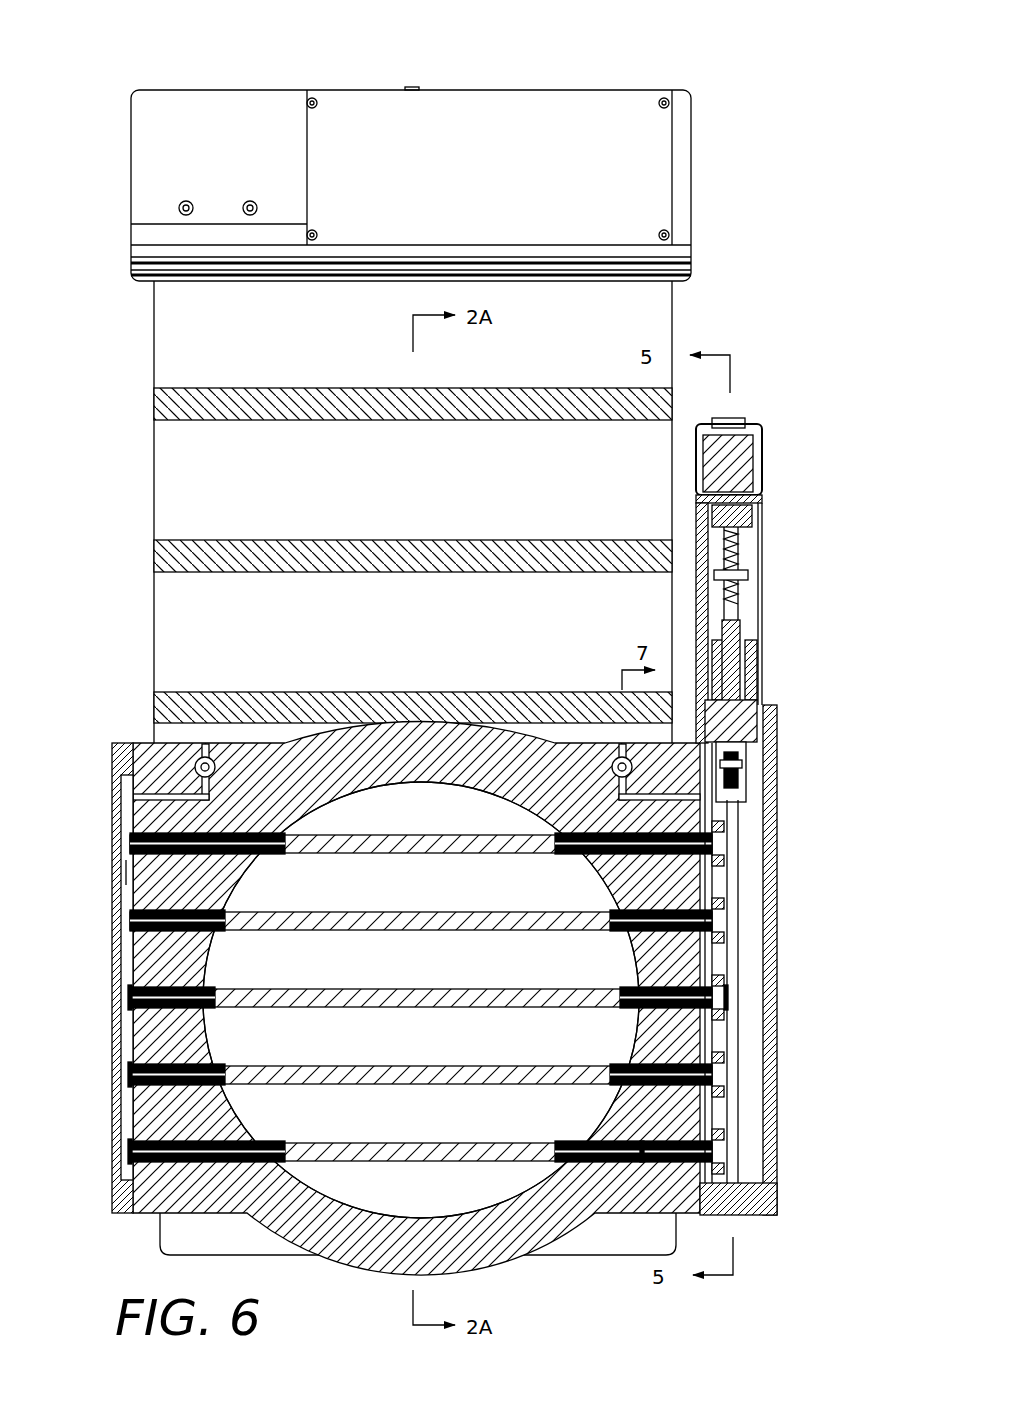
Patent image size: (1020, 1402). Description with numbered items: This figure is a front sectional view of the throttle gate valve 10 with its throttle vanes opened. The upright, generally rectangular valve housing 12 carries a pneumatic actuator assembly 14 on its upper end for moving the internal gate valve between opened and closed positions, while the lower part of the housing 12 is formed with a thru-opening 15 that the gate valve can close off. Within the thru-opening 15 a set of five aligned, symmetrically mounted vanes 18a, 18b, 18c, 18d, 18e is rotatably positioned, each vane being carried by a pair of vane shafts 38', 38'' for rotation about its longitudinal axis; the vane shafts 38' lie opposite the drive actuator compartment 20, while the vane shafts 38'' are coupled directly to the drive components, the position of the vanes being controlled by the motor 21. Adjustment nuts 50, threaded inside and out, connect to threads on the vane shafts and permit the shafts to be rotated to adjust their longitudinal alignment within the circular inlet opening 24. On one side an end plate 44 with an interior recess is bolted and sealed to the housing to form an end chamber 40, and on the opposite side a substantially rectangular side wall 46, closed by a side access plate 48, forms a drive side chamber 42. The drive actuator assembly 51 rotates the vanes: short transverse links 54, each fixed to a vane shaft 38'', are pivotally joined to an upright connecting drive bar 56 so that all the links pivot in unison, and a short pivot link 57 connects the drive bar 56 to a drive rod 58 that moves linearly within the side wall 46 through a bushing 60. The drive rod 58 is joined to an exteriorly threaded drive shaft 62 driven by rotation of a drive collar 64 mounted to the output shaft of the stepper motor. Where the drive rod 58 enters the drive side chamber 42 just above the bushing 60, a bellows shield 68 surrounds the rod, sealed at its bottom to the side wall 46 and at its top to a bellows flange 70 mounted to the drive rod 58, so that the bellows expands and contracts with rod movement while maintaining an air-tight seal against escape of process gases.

The throttle gate valve 10 is at (676, 40).
The valve housing 12 is at (177, 365).
The pneumatic actuator assembly 14 is at (157, 185).
The thru-opening 15 is at (435, 800).
The vane 18a is at (410, 854).
The vane 18b is at (373, 931).
The vane 18c is at (430, 1008).
The vane 18d is at (383, 1085).
The vane 18e is at (412, 1162).
The drive actuator compartment 20 is at (800, 937).
The motor 21 is at (795, 465).
The inlet opening 24 is at (340, 1190).
The vane shaft 38' is at (91, 979).
The vane shaft 38'' is at (782, 1014).
The end chamber 40 is at (126, 872).
The drive side chamber 42 is at (770, 1122).
The end plate 44 is at (118, 750).
The side wall 46 is at (760, 680).
The side access plate 48 is at (770, 1082).
The adjustment nut 50 is at (126, 1048).
The drive actuator assembly 51 is at (800, 797).
The transverse link 54 is at (746, 937).
The connecting drive bar 56 is at (745, 862).
The pivot link 57 is at (742, 775).
The drive rod 58 is at (745, 752).
The bushing 60 is at (750, 722).
The drive shaft 62 is at (745, 600).
The drive collar 64 is at (758, 575).
The bellows shield 68 is at (748, 658).
The bellows flange 70 is at (740, 622).